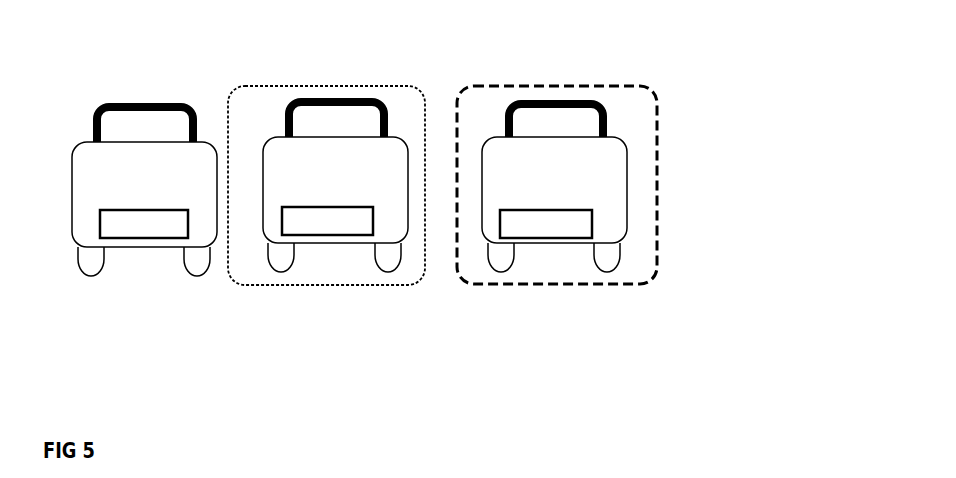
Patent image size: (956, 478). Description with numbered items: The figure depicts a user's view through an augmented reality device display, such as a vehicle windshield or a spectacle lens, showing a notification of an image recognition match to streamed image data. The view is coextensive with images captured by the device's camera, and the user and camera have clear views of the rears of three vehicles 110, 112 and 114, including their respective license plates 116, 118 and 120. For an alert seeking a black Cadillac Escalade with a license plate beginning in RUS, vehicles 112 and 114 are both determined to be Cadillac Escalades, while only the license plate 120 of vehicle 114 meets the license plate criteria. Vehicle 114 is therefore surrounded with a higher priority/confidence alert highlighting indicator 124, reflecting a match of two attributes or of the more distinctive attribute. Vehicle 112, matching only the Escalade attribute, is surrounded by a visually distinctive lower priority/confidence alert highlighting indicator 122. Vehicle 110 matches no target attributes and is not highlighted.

The vehicle 110 is at (80, 142).
The vehicle 112 is at (268, 140).
The vehicle 114 is at (488, 140).
The license plate 116 is at (120, 238).
The license plate 118 is at (315, 235).
The license plate 120 is at (547, 238).
The lower priority/confidence alert highlighting indicator 122 is at (245, 287).
The higher priority/confidence alert highlighting indicator 124 is at (477, 285).